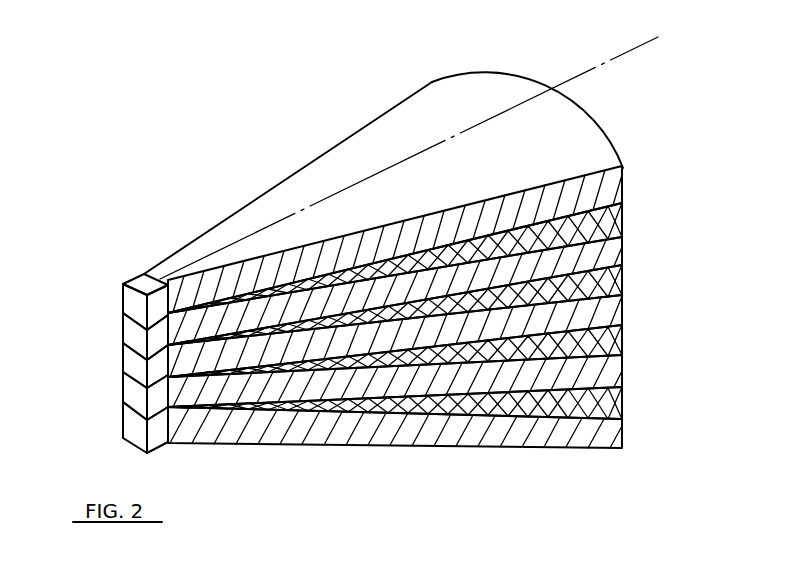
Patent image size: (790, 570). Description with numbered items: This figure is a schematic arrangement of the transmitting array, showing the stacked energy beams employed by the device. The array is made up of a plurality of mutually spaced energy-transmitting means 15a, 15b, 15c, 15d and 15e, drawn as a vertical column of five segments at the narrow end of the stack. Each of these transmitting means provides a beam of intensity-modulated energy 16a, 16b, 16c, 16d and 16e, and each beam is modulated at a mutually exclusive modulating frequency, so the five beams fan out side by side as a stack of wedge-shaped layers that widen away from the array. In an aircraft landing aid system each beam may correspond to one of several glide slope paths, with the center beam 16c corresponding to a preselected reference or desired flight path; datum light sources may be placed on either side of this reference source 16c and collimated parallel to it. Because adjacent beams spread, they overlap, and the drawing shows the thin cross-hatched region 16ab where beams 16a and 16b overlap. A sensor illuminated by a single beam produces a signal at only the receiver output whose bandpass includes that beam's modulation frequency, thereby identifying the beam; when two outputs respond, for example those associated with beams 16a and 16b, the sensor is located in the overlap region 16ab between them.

The energy-transmitting means 15a is at (132, 310).
The energy-transmitting means 15b is at (132, 338).
The energy-transmitting means 15c is at (132, 365).
The energy-transmitting means 15d is at (132, 393).
The energy-transmitting means 15e is at (132, 420).
The beam of intensity-modulated energy 16a is at (585, 194).
The region of overlap of beams 16ab is at (583, 228).
The beam of intensity-modulated energy 16b is at (588, 260).
The beam of intensity-modulated energy 16c is at (590, 317).
The beam of intensity-modulated energy 16d is at (583, 377).
The beam of intensity-modulated energy 16e is at (590, 438).